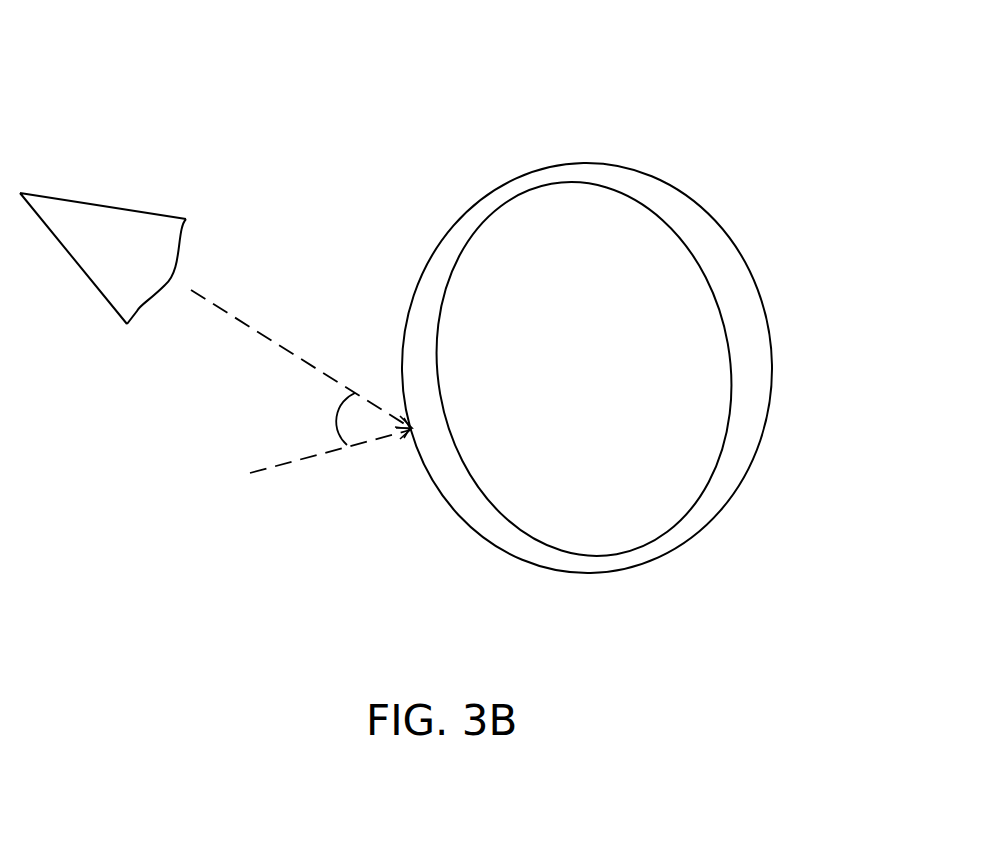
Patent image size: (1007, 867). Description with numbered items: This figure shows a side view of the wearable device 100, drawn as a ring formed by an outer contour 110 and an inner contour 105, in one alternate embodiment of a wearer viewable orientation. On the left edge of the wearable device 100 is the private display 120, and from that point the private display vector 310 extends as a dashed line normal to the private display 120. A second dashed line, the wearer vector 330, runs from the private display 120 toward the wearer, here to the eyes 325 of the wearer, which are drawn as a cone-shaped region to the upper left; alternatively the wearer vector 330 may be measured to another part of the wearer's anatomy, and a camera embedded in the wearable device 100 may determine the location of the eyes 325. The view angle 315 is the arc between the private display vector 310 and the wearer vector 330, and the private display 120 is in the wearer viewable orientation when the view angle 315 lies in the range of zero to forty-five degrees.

The wearable device 100 is at (133, 70).
The inner ring / eyepiece lens 105 is at (627, 572).
The outer ring / display frame 110 is at (773, 340).
The private display 120 is at (402, 432).
The private display vector 310 is at (365, 445).
The view angle 315 is at (340, 416).
The eyes 325 is at (186, 219).
The wearer vector 330 is at (263, 333).